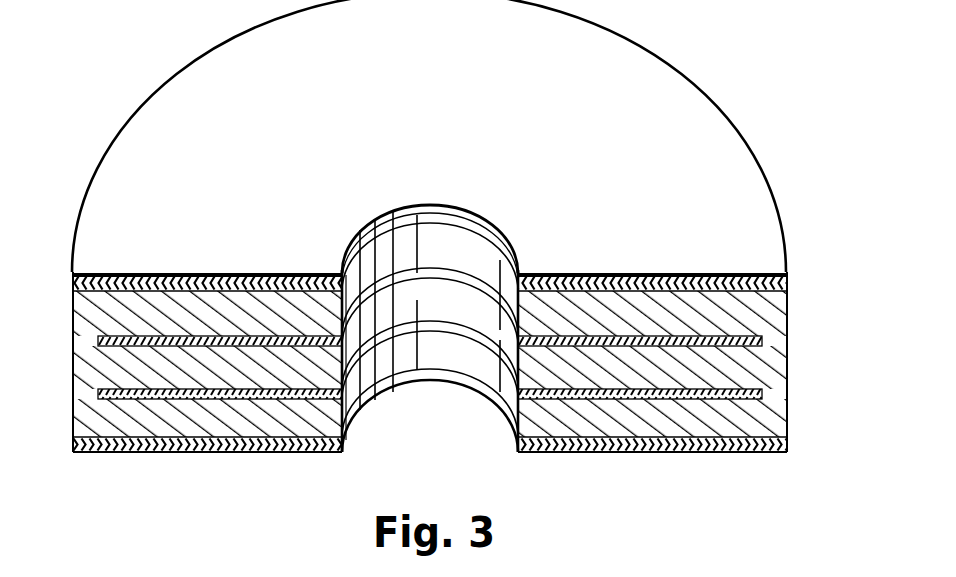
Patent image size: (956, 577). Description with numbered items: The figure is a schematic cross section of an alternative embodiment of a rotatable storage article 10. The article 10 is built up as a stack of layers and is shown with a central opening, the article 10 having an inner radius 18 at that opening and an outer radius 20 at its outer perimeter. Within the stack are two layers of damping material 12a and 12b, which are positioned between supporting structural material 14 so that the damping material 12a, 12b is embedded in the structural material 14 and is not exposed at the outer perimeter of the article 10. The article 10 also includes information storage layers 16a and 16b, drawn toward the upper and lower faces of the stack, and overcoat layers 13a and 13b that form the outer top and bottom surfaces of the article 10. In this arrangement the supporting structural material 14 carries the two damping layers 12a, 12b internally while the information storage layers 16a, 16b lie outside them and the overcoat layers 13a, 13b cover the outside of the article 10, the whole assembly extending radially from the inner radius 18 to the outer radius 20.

The rotatable storage article 10 is at (439, 246).
The layer of damping material 12a is at (735, 336).
The layer of damping material 12b is at (768, 397).
The overcoat layer 13a is at (655, 86).
The overcoat layer 13b is at (280, 447).
The supporting structural material 14 is at (103, 356).
The information storage layer 16a is at (787, 284).
The information storage layer 16b is at (770, 445).
The inner radius 18 is at (447, 352).
The outer radius 20 is at (85, 412).